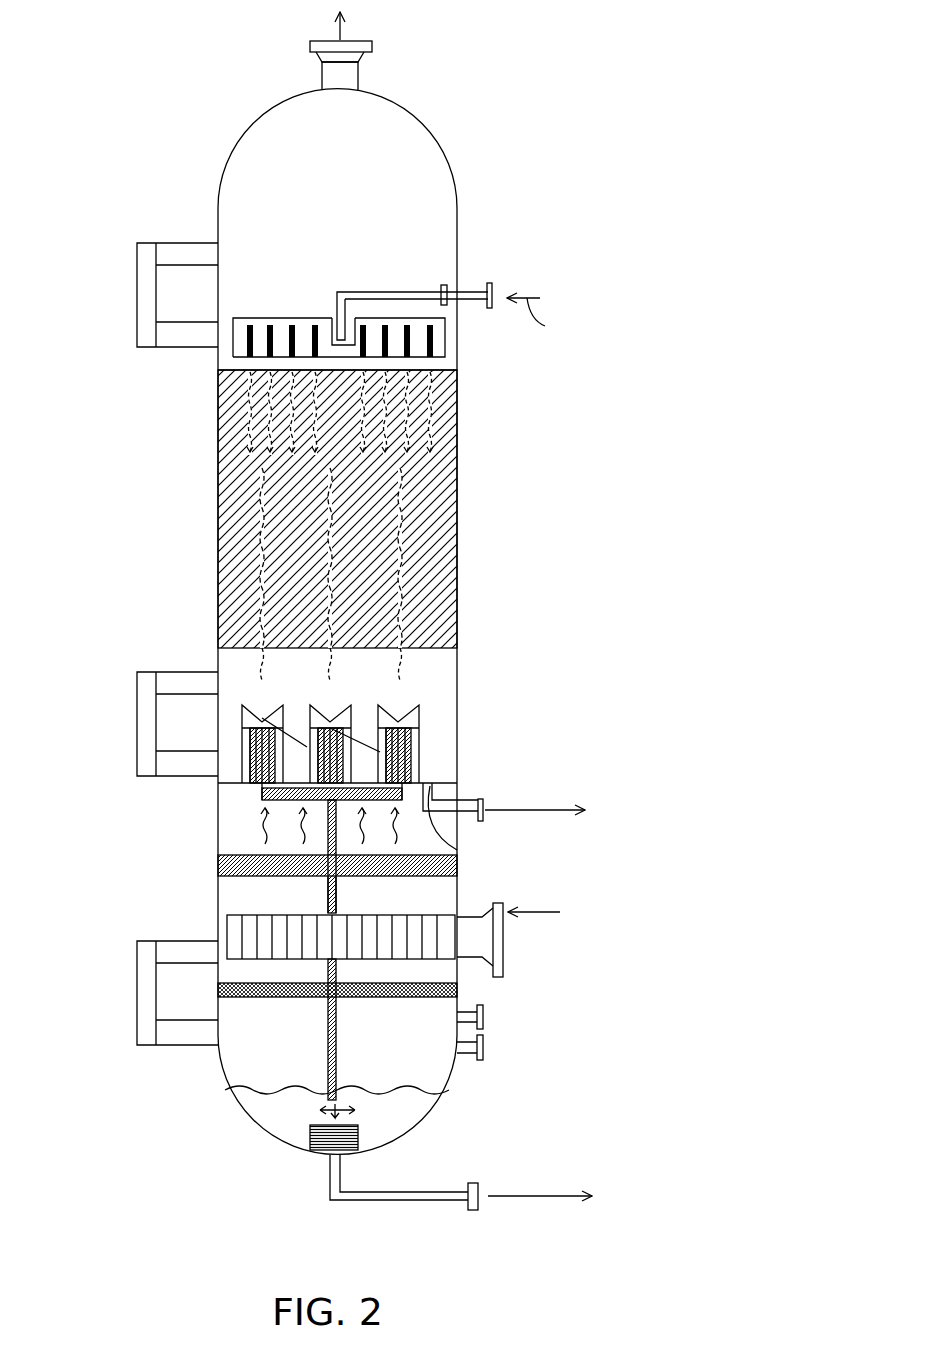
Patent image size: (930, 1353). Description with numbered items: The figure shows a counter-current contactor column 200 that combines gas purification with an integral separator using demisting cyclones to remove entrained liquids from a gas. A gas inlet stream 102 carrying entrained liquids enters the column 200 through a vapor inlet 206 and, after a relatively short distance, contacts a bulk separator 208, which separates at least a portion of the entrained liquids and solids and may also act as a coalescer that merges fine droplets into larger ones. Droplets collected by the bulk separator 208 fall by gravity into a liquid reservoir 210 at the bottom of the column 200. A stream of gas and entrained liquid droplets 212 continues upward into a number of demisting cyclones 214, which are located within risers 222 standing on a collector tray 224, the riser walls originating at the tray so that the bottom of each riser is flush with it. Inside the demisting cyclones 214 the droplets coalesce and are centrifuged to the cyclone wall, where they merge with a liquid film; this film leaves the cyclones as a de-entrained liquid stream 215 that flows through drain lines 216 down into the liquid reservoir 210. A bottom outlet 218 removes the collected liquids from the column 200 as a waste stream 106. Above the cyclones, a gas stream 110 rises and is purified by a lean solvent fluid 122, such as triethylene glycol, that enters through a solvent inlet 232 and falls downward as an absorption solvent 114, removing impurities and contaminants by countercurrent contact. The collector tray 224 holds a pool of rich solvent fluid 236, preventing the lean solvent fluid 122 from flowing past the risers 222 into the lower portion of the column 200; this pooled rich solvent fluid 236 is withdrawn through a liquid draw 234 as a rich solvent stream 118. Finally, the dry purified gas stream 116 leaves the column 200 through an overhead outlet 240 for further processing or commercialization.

The column 200 is at (575, 97).
The purified gas stream 116 is at (346, 38).
The overhead outlet 240 is at (362, 78).
The solvent inlet 232 is at (470, 292).
The lean solvent fluid 122 is at (550, 320).
The absorption solvent 114 is at (228, 405).
The gas stream 110 is at (435, 546).
The risers 222 is at (263, 750).
The demisting cyclones 214 is at (248, 758).
The rich solvent fluid 236 is at (235, 783).
The stream of gas and entrained liquid droplets 212 is at (262, 830).
The bulk separator 208 is at (232, 856).
The drain lines 216 is at (327, 890).
The de-entrained liquid stream 215 is at (337, 888).
The vapor inlet 206 is at (466, 915).
The gas inlet stream 102 is at (565, 916).
The rich solvent stream 118 is at (543, 807).
The liquid draw 234 is at (466, 814).
The collector tray 224 is at (457, 850).
The liquid reservoir 210 is at (420, 1108).
The bottom outlet 218 is at (423, 1203).
The waste stream 106 is at (533, 1194).